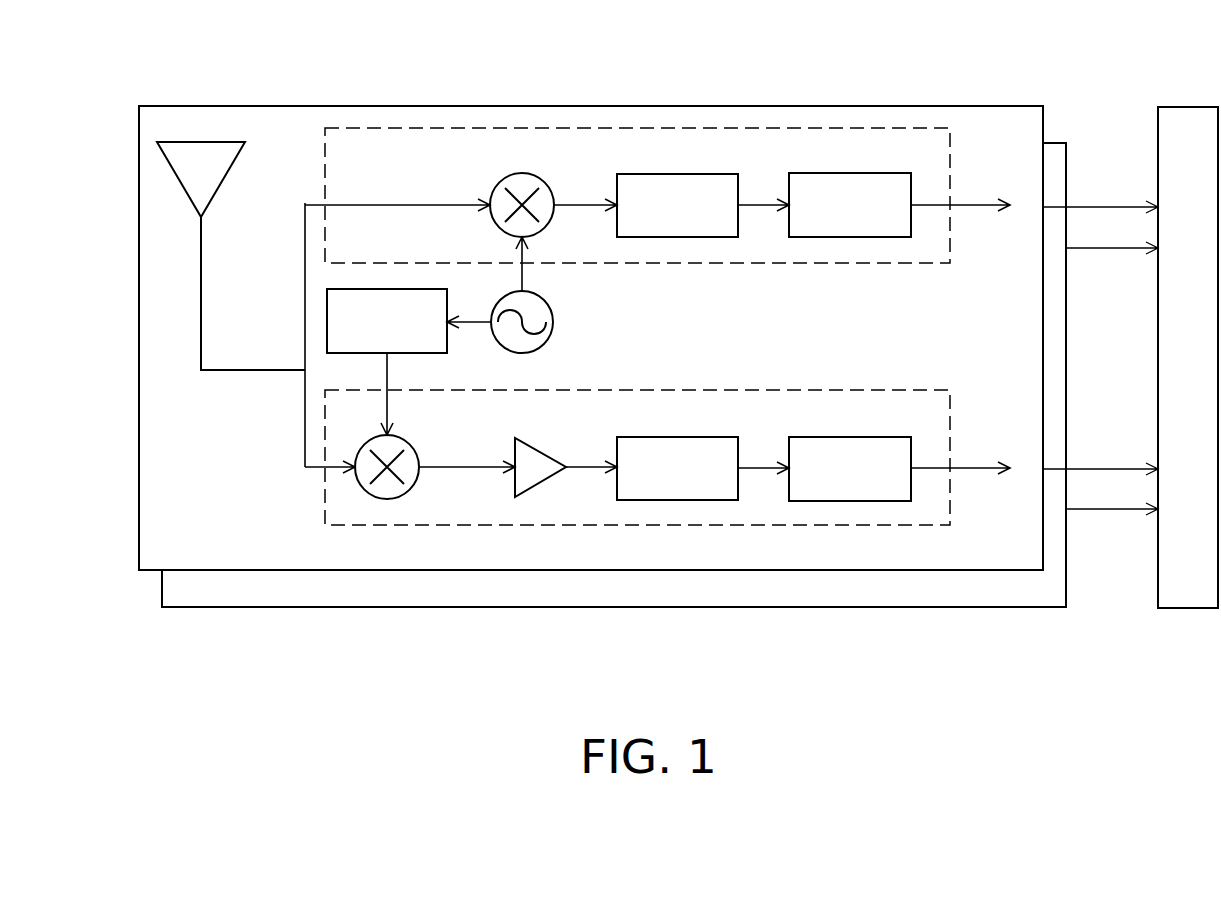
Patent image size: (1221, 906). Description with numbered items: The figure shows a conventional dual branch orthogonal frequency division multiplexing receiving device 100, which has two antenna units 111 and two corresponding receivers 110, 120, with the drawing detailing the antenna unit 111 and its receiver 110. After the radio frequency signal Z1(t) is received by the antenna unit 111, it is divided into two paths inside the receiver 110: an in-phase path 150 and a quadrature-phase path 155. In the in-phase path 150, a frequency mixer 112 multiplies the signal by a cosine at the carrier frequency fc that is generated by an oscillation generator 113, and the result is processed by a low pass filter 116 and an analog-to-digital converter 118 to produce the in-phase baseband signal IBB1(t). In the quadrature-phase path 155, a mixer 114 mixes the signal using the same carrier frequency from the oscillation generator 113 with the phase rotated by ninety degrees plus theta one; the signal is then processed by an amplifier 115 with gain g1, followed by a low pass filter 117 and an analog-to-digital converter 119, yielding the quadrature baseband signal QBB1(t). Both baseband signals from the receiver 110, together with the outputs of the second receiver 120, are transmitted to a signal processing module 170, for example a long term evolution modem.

The receiving device 100 is at (1215, 743).
The receiver 110 is at (748, 106).
The antenna unit 111 is at (221, 185).
The frequency mixer 112 is at (541, 177).
The oscillation generator 113 is at (554, 322).
The mixer 114 is at (406, 438).
The amplifier 115 is at (550, 454).
The low pass filter 116 is at (655, 174).
The low pass filter 117 is at (655, 437).
The analog-to-digital converter 118 is at (825, 173).
The analog-to-digital converter 119 is at (825, 437).
The receiver 120 is at (878, 607).
The in-phase path 150 is at (860, 263).
The quadrature-phase path 155 is at (860, 390).
The signal processing module 170 is at (1200, 107).